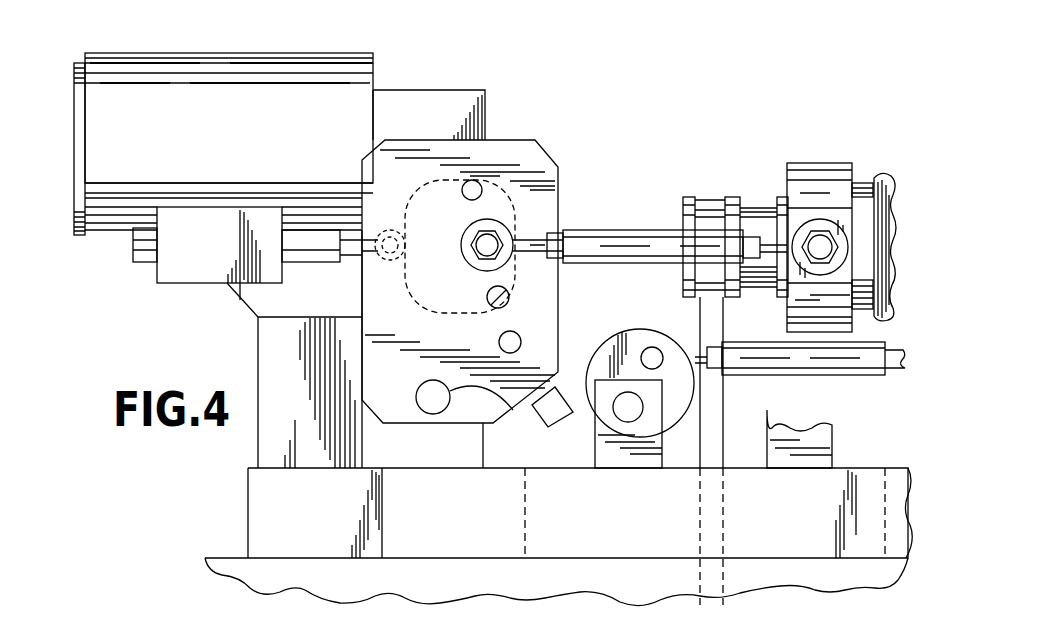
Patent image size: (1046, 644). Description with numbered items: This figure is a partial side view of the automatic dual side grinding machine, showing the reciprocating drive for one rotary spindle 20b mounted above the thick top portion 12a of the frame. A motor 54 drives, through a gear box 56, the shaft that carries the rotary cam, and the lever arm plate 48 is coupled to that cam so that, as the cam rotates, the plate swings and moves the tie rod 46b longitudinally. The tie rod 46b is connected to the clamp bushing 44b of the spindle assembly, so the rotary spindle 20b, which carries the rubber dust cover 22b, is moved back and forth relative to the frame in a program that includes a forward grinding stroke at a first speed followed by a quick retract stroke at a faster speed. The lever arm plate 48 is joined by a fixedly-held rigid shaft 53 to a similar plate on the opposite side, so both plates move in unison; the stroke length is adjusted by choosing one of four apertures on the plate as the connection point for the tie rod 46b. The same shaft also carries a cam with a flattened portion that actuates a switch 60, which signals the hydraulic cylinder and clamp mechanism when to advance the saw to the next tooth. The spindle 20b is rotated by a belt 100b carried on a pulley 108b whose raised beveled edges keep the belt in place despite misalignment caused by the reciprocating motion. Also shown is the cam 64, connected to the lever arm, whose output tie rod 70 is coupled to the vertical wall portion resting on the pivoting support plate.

The motor 54 is at (284, 53).
The gear box 56 is at (438, 107).
The lever arm plate 48 is at (560, 180).
The switch 60 is at (210, 262).
The tie rod 46b is at (662, 228).
The belt 100b is at (707, 197).
The pulley 108b is at (729, 197).
The rotary spindle 20b is at (757, 210).
The clamp bushing 44b is at (818, 188).
The rubber dust cover 22b is at (886, 177).
The cam 64 is at (592, 352).
The output tie rod 70 is at (835, 378).
The rigid shaft 53 is at (515, 412).
The top portion 12a is at (822, 528).